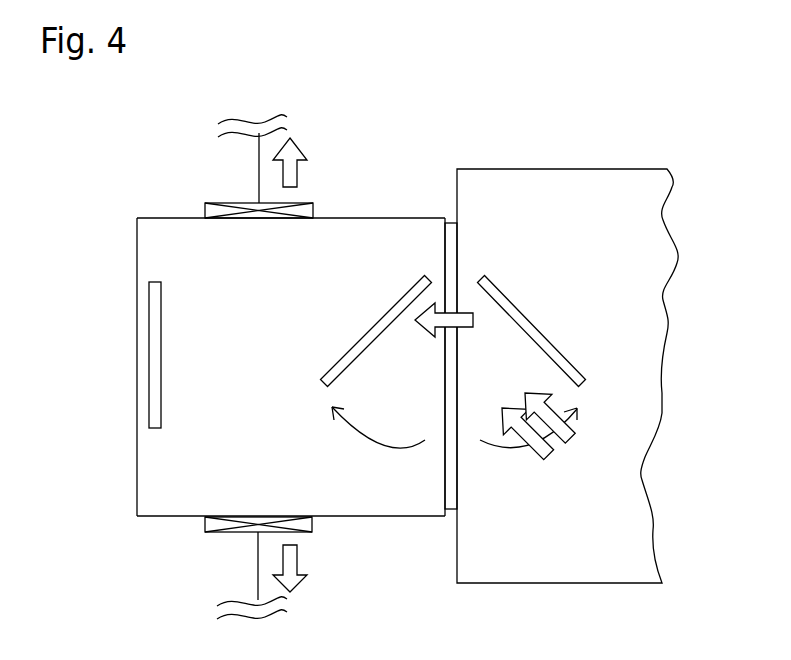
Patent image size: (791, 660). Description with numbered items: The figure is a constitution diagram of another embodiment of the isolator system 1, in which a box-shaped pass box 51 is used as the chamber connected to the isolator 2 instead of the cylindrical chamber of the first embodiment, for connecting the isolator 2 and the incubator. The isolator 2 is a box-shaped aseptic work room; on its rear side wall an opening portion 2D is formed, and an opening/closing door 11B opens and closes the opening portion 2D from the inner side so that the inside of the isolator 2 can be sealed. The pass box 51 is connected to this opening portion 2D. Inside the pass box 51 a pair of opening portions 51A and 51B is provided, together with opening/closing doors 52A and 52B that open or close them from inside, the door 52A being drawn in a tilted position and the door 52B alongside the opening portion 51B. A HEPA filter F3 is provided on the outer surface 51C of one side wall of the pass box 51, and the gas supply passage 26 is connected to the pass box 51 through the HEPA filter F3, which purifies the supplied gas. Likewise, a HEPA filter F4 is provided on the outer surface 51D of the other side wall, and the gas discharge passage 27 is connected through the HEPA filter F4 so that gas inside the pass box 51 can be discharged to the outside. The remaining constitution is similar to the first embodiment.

The isolator system 1 is at (552, 328).
The isolator 2 is at (608, 187).
The opening portion 2D is at (450, 357).
The opening/closing door 11B is at (523, 322).
The gas supply passage 26 is at (259, 163).
The gas discharge passage 27 is at (258, 563).
The pass box 51 is at (237, 378).
The opening portion 51A is at (445, 393).
The opening portion 51B is at (147, 378).
The outer surface 51C is at (165, 218).
The outer surface 51D is at (167, 517).
The opening/closing door 52A is at (365, 345).
The opening/closing door 52B is at (153, 352).
The HEPA filter F3 is at (313, 204).
The HEPA filter F4 is at (303, 522).